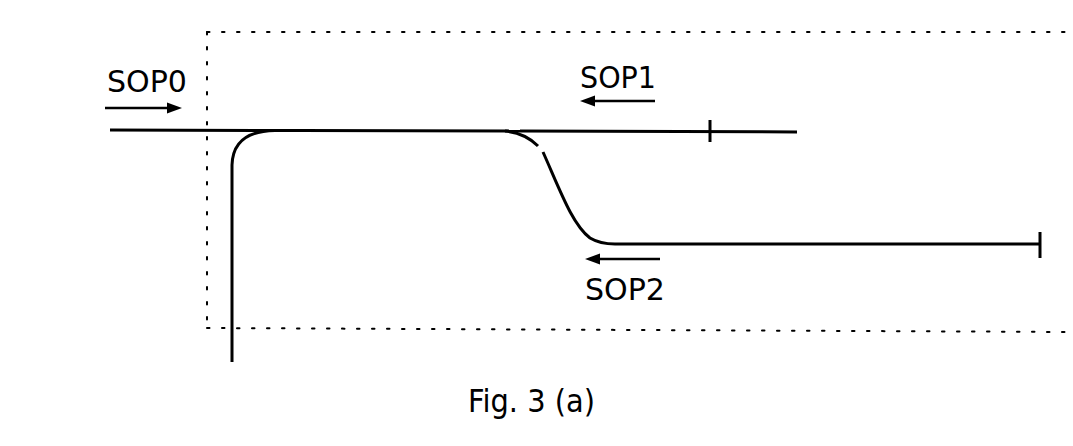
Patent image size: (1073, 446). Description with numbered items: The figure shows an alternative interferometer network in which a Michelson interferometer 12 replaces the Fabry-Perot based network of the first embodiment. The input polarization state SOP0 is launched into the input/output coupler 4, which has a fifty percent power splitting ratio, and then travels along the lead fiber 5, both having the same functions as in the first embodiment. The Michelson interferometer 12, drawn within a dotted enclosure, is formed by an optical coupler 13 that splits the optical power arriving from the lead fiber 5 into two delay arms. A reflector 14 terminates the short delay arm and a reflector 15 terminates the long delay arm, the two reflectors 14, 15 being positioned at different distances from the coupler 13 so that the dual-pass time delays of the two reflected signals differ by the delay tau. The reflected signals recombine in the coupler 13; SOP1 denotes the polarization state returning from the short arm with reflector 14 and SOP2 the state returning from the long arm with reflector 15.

The input/output optical coupler 4 is at (256, 225).
The lead fiber 5 is at (410, 109).
The Michelson interferometer 12 is at (640, 182).
The optical coupler 13 is at (590, 166).
The reflector 14 is at (736, 115).
The reflector 15 is at (837, 267).